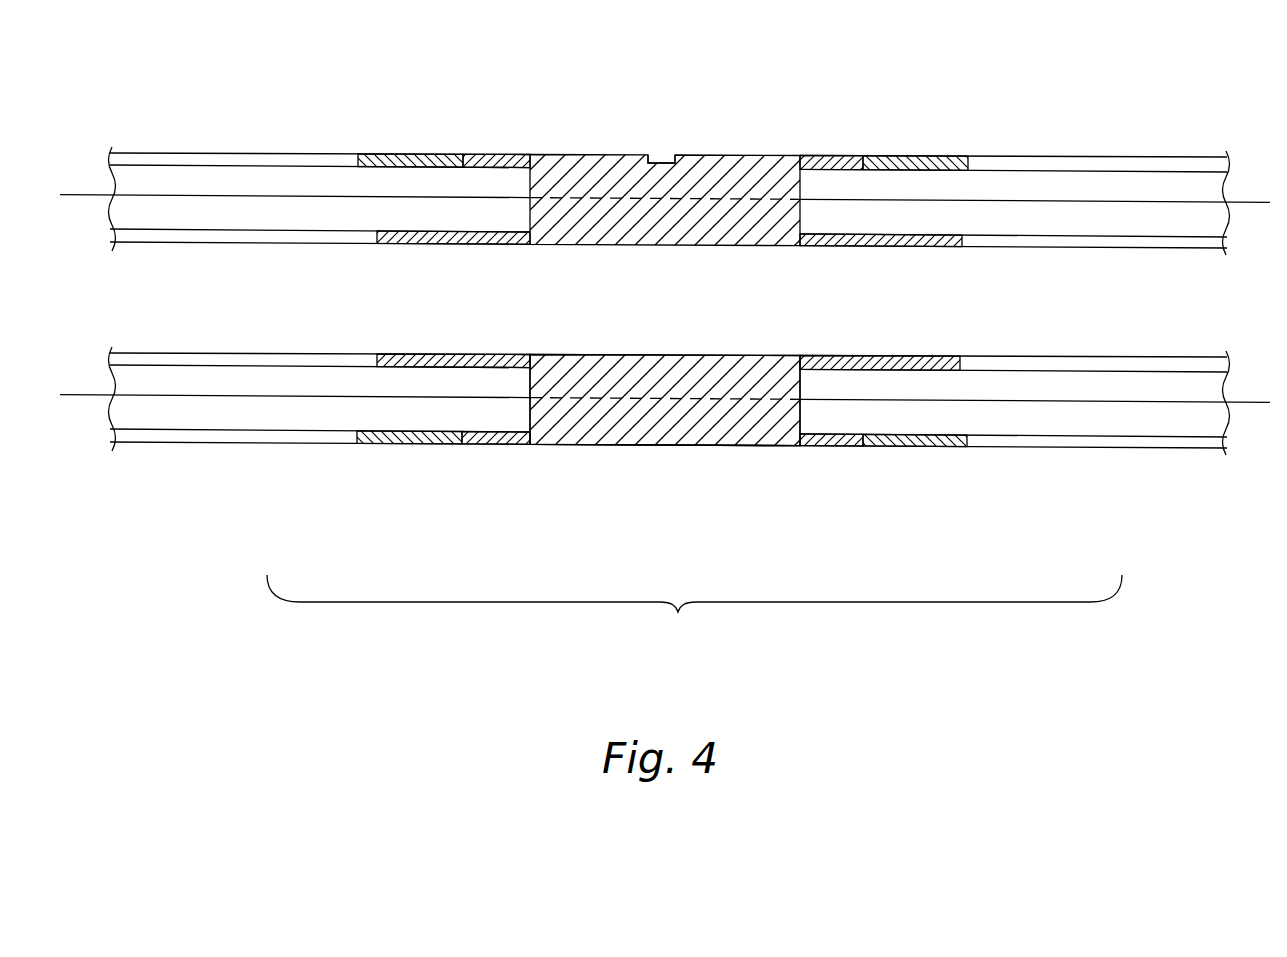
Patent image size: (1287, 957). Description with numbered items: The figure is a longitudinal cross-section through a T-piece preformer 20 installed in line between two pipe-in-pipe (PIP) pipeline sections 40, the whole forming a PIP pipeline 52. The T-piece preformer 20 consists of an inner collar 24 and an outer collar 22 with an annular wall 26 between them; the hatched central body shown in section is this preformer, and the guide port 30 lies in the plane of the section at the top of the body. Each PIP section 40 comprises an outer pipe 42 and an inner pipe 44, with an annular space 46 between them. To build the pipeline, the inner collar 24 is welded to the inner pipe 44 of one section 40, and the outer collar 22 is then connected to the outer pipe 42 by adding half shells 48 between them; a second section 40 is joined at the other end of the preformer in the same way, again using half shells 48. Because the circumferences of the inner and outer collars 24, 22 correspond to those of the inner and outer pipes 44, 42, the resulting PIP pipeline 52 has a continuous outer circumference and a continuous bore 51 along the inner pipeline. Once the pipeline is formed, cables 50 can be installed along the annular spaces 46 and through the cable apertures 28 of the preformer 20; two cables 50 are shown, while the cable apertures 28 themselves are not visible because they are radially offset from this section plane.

The T-piece preformer 20 is at (750, 472).
The outer collar 22 is at (510, 153).
The inner collar 24 is at (483, 351).
The annular wall 26 is at (680, 438).
The cable apertures 28 is at (600, 440).
The guide port 30 is at (664, 142).
The PIP pipeline section 40 is at (184, 135).
The outer pipe 42 is at (224, 152).
The inner pipe 44 is at (278, 245).
The annular space 46 is at (188, 191).
The half shells 48 is at (400, 153).
The cables 50 is at (210, 197).
The bore 51 is at (453, 316).
The PIP pipeline 52 is at (678, 612).